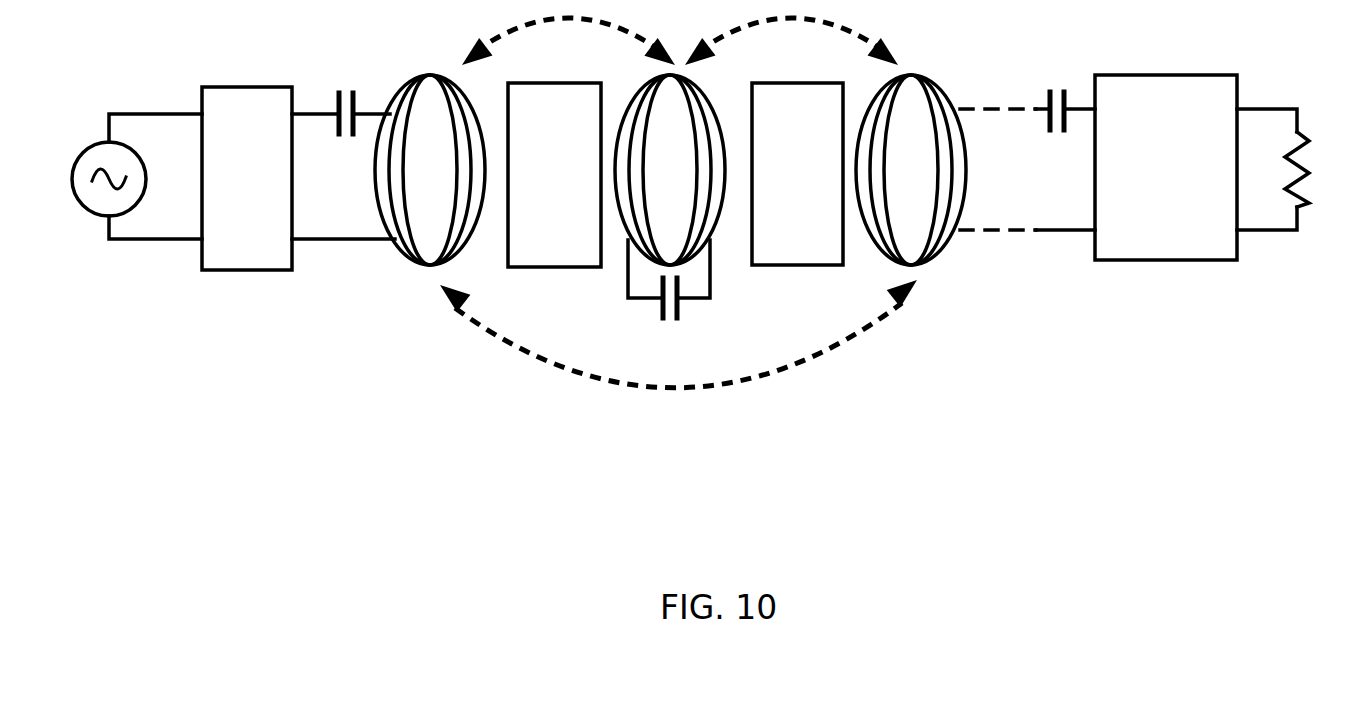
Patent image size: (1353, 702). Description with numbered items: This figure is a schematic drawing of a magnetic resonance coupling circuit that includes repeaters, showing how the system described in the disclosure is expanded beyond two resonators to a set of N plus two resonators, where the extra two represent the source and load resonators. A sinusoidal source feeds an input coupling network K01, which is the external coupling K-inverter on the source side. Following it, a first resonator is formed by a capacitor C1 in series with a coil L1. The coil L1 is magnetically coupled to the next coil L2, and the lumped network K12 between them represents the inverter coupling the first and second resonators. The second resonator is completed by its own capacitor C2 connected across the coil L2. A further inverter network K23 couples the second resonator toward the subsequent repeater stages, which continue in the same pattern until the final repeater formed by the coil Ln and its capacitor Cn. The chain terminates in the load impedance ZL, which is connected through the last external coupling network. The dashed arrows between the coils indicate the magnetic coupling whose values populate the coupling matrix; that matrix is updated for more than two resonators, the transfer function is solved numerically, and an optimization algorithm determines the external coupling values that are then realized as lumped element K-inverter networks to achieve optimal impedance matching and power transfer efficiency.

The input coupling network K01 is at (251, 178).
The first resonator capacitor C1 is at (352, 146).
The first resonator coil L1 is at (430, 170).
The coupling network between first and second resonators K12 is at (558, 175).
The second resonator coil L2 is at (670, 170).
The second resonator capacitor C2 is at (669, 302).
The coupling network between second and third resonators K23 is at (801, 174).
The nth resonator coil Ln is at (911, 170).
The nth resonator capacitor Cn is at (1069, 137).
The load impedance ZL is at (1295, 169).